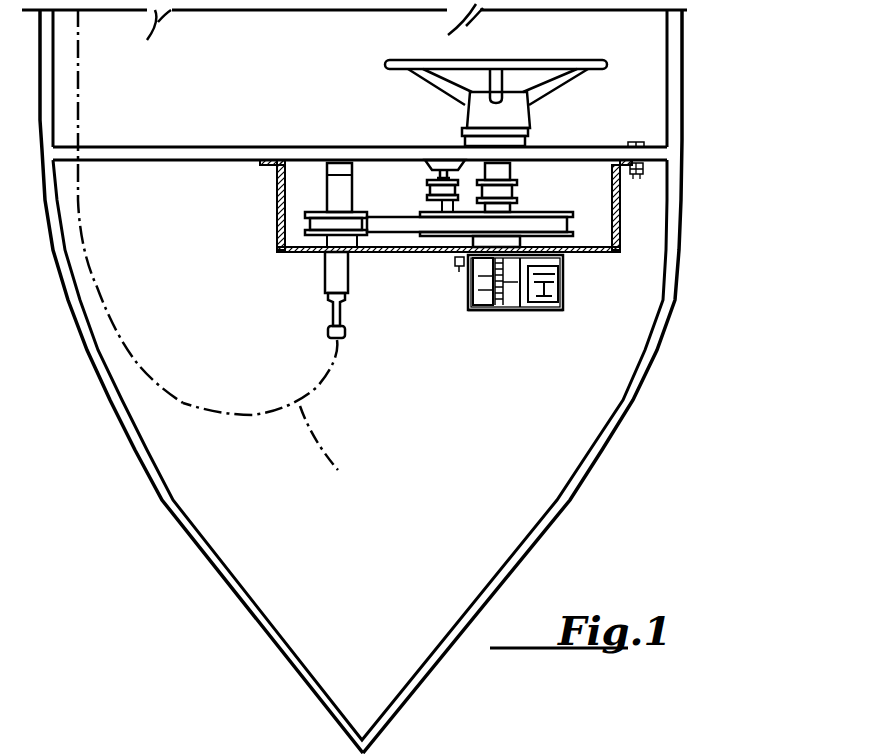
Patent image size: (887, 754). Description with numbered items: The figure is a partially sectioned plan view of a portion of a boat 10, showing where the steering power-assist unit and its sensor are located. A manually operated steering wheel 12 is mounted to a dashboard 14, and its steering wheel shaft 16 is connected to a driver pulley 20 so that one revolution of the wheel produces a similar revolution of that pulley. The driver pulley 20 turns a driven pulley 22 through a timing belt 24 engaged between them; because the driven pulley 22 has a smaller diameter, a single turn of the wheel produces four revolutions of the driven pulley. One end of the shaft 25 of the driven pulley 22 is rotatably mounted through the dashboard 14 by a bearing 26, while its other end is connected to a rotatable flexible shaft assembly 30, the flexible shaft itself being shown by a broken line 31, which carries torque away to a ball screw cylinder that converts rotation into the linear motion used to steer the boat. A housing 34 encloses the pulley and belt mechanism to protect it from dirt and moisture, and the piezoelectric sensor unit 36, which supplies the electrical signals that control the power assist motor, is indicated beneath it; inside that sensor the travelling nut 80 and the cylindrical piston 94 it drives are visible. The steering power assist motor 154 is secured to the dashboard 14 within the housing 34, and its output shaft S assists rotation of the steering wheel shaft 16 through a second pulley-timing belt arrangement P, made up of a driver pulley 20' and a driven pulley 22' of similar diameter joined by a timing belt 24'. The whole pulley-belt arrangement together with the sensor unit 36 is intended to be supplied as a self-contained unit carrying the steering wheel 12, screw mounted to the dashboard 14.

The boat 10 is at (160, 504).
The steering wheel 12 is at (520, 63).
The dashboard 14 is at (140, 152).
The steering wheel shaft 16 is at (502, 176).
The driver pulley 20 is at (450, 229).
The driver pulley 20' is at (398, 155).
The driven pulley 22 is at (295, 209).
The driven pulley 22' is at (556, 150).
The timing belt 24 is at (464, 258).
The timing belt 24' is at (545, 195).
The shaft 25 is at (320, 250).
The bearing 26 is at (336, 165).
The rotatable flexible shaft assembly 30 is at (313, 280).
The rotatable flexible shaft 31 is at (276, 415).
The housing 34 is at (401, 253).
The piezoelectric sensor unit 36 is at (503, 326).
The travelling nut 80 is at (470, 294).
The cylindrical piston 94 is at (553, 309).
The steering power assist motor 154 is at (450, 166).
The output shaft S is at (445, 178).
The pulley-timing belt arrangement P is at (425, 193).